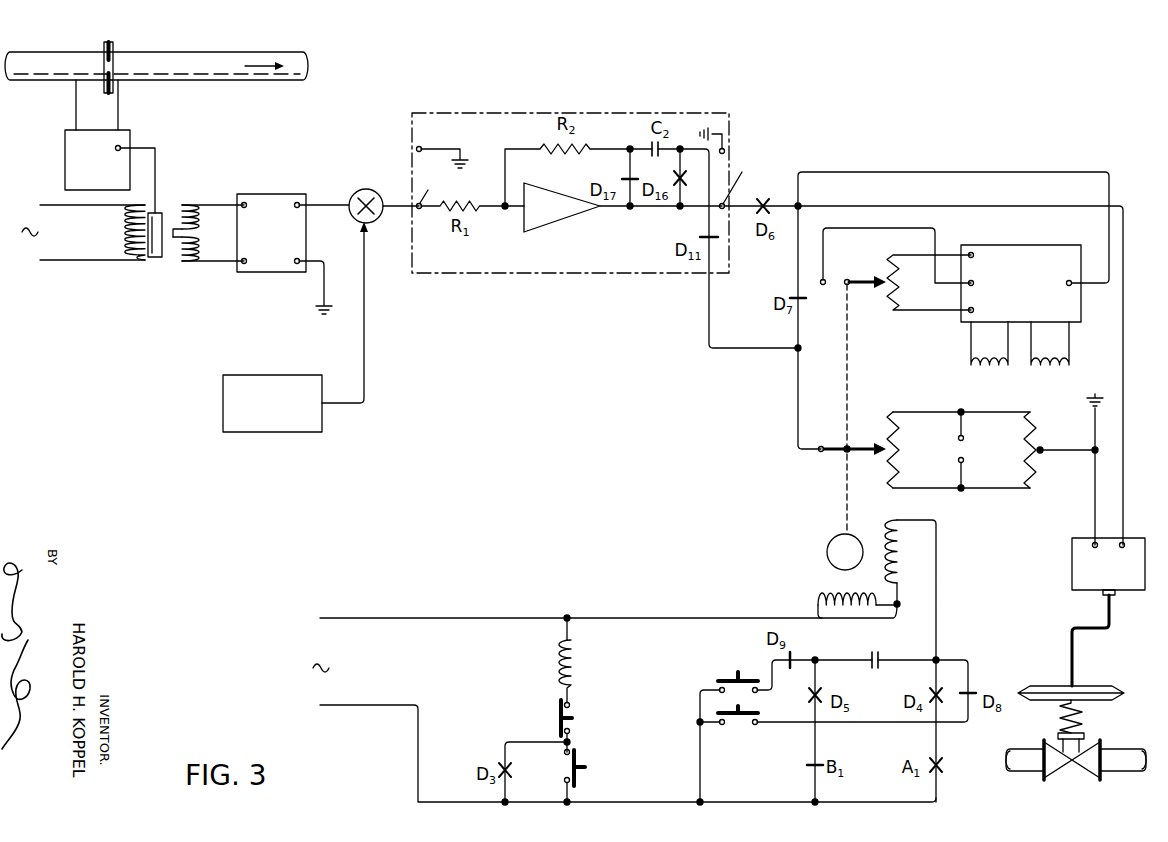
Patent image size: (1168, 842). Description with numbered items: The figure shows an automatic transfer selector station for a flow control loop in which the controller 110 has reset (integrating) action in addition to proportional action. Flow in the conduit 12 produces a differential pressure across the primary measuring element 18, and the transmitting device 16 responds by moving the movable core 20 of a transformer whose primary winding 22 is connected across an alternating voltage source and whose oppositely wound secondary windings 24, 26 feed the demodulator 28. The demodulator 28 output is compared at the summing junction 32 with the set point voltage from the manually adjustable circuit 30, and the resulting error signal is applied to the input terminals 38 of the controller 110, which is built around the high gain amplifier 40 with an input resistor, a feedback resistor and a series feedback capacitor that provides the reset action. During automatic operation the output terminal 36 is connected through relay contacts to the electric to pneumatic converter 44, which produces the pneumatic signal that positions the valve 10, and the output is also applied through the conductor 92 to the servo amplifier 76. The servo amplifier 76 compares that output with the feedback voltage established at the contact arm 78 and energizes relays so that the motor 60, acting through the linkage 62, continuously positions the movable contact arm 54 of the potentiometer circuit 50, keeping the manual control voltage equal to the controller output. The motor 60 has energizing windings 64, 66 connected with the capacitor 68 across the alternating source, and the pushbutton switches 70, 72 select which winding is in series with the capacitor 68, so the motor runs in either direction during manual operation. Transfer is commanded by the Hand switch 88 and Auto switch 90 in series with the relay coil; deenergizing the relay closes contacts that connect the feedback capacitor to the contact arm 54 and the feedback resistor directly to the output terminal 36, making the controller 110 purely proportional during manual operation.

The valve 10 is at (1087, 714).
The conduit 12 is at (255, 83).
The transmitting device 16 is at (65, 174).
The primary measuring element 18 is at (118, 79).
The movable core 20 is at (161, 212).
The primary winding 22 is at (124, 232).
The secondary winding 24 is at (185, 220).
The secondary winding 26 is at (170, 263).
The demodulator 28 is at (262, 243).
The manually adjustable circuit 30 is at (268, 433).
The summing junction 32 is at (366, 189).
The output terminal 36 is at (729, 156).
The input terminals 38 is at (443, 178).
The D.-C. amplifier 40 is at (562, 226).
The electric to pneumatic converter 44 is at (1072, 560).
The potentiometer circuit 50 is at (919, 455).
The movable contact arm 54 is at (858, 446).
The electric motor 60 is at (833, 538).
The linkage 62 is at (843, 470).
The energizing winding 64 is at (902, 556).
The energizing winding 66 is at (826, 594).
The capacitor 68 is at (882, 653).
The pushbutton switch 70 is at (750, 672).
The pushbutton switch 72 is at (744, 724).
The servo amplifier 76 is at (1060, 245).
The contact arm 78 is at (858, 280).
The Hand pushbutton switch 88 is at (556, 705).
The Auto pushbutton switch 90 is at (572, 765).
The conductor 92 is at (990, 172).
The controller 110 is at (500, 113).